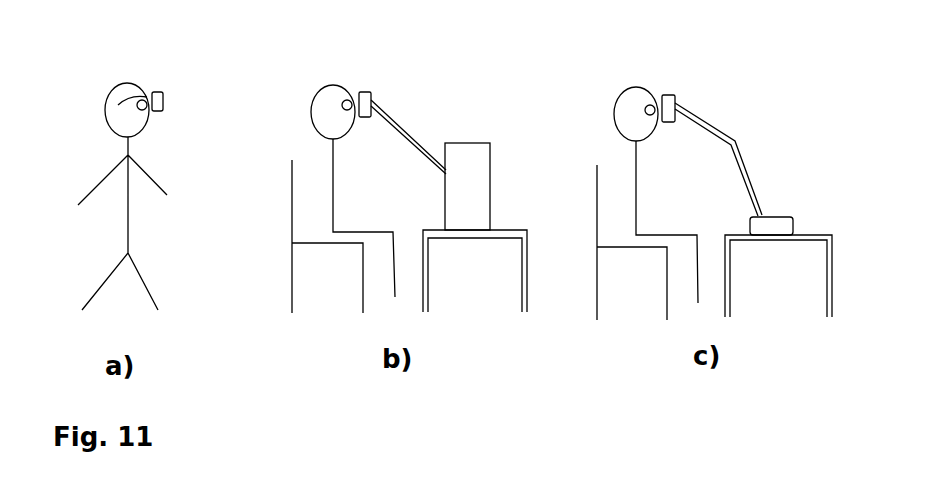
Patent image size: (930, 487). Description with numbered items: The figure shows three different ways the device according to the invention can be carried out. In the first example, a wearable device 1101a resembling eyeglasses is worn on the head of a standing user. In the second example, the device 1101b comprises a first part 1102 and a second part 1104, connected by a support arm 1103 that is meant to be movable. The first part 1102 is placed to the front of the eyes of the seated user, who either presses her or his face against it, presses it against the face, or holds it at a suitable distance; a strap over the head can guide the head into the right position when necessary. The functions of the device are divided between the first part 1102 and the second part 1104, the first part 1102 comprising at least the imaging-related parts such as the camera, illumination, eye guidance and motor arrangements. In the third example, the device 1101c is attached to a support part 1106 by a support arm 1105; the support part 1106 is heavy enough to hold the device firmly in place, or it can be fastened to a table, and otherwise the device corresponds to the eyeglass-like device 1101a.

The device 1101a is at (160, 90).
The device 1101b is at (408, 129).
The device 1101c is at (670, 93).
The first part 1102 is at (363, 92).
The support arm 1103 is at (422, 150).
The second part 1104 is at (490, 148).
The support arm 1105 is at (720, 130).
The support part 1106 is at (772, 215).